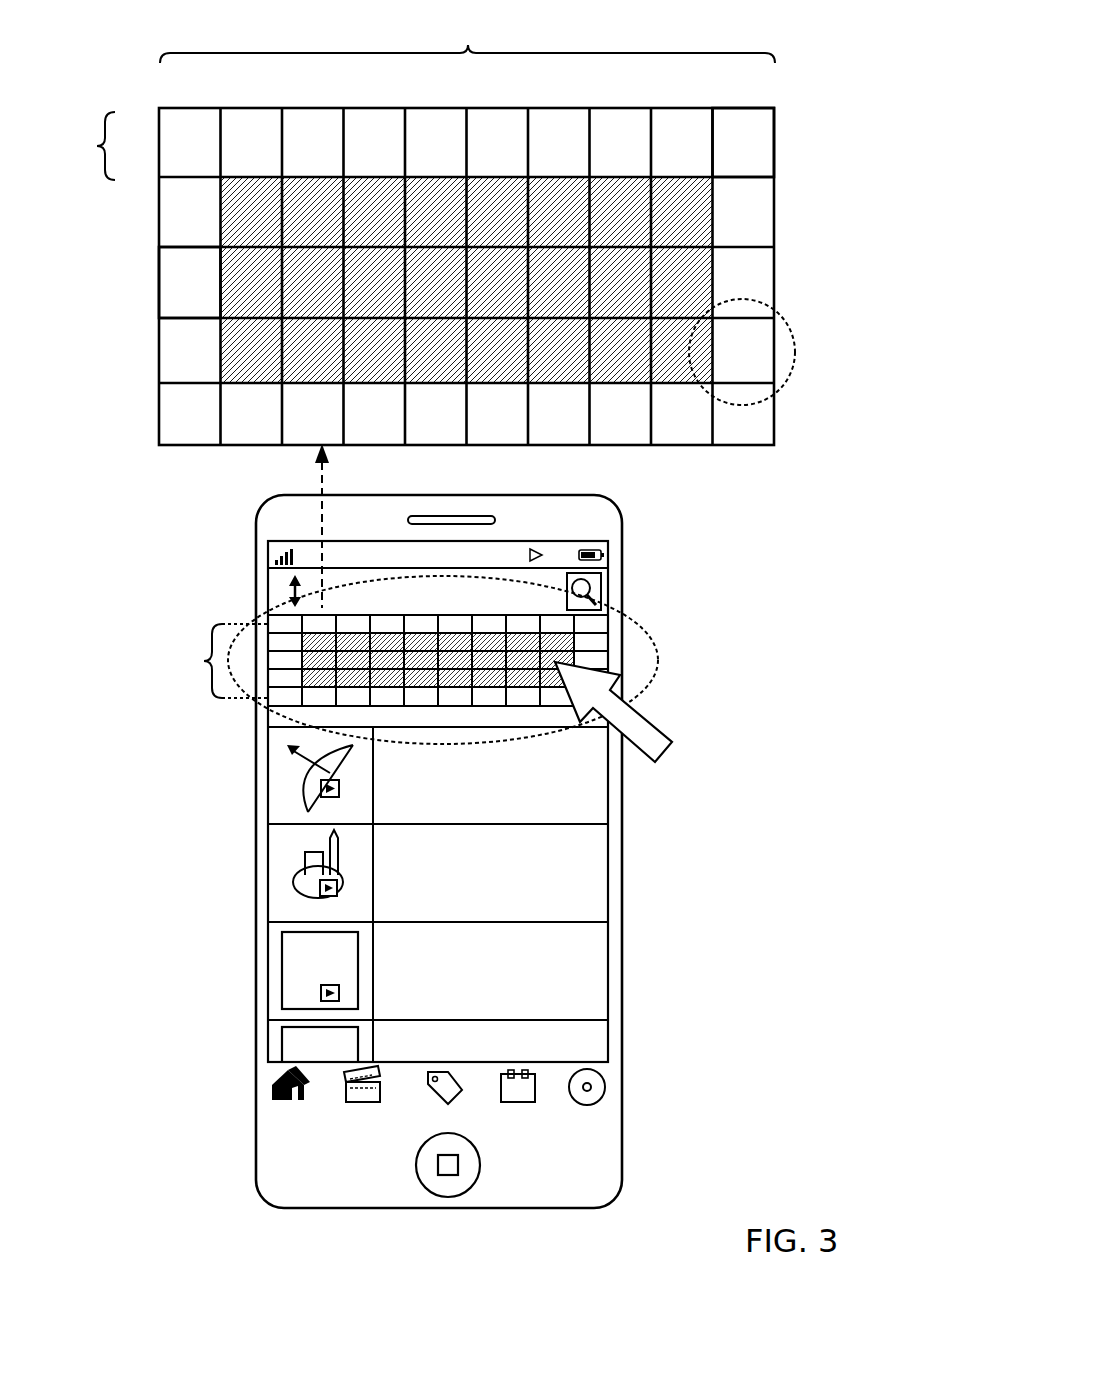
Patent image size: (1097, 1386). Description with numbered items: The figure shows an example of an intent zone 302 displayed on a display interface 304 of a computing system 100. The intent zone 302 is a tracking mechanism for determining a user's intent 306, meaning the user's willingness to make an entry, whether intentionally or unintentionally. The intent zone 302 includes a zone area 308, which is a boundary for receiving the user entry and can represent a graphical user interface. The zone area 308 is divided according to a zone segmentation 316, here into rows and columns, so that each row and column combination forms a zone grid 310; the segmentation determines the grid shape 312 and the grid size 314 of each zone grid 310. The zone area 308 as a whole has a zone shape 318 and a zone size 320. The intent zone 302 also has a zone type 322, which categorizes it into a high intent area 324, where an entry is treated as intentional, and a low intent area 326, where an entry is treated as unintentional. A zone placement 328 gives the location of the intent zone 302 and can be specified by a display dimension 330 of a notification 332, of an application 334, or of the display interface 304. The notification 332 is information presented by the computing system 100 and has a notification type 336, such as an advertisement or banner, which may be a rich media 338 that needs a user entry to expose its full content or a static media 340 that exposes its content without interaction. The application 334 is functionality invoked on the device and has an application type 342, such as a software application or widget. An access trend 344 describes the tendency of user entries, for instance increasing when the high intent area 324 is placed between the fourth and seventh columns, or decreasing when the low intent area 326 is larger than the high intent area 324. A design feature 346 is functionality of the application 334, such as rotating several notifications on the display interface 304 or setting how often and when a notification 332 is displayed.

The computing system 100 is at (150, 72).
The intent zone 302 is at (608, 616).
The display interface 304 is at (262, 580).
The user's intent 306 is at (637, 718).
The zone area 308 is at (495, 293).
The zone grid 310 is at (742, 147).
The grid shape 312 is at (746, 292).
The grid size 314 is at (80, 146).
The zone segmentation 316 is at (190, 257).
The zone shape 318 is at (656, 624).
The zone size 320 is at (467, 39).
The zone type 322 is at (318, 488).
The high intent area 324 is at (636, 396).
The low intent area 326 is at (428, 606).
The zone placement 328 is at (494, 577).
The display dimension 330 is at (578, 948).
The notification 332 is at (596, 857).
The application 334 is at (280, 1075).
The notification type 336 is at (593, 1133).
The rich media 338 is at (300, 937).
The static media 340 is at (275, 1033).
The application type 342 is at (334, 1137).
The access trend 344 is at (294, 572).
The design feature 346 is at (592, 642).